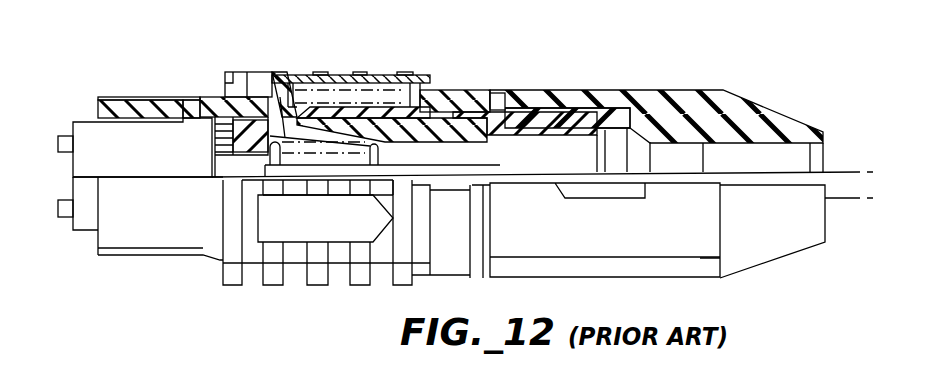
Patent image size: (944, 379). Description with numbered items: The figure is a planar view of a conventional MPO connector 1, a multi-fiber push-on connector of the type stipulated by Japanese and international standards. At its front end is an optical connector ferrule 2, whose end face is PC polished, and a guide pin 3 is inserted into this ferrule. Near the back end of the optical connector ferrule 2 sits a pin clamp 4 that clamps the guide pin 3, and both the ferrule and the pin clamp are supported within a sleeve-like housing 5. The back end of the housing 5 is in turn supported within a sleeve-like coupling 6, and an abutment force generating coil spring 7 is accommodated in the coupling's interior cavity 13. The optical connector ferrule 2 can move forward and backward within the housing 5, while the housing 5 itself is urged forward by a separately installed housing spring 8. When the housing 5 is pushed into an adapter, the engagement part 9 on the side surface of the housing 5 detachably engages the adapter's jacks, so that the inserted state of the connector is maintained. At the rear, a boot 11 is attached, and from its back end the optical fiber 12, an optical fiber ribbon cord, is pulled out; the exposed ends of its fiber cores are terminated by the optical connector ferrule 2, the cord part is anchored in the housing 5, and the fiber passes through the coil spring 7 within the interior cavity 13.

The MPO connector 1 is at (564, 84).
The optical connector ferrule 2 is at (80, 228).
The guide pin 3 is at (67, 133).
The pin clamp 4 is at (248, 72).
The housing 5 is at (127, 97).
The coupling 6 is at (367, 75).
The coil spring 7 is at (273, 142).
The housing spring 8 is at (410, 73).
The engagement part 9 is at (217, 97).
The boot 11 is at (193, 100).
The optical fiber 12 is at (846, 172).
The interior cavity 13 is at (465, 150).